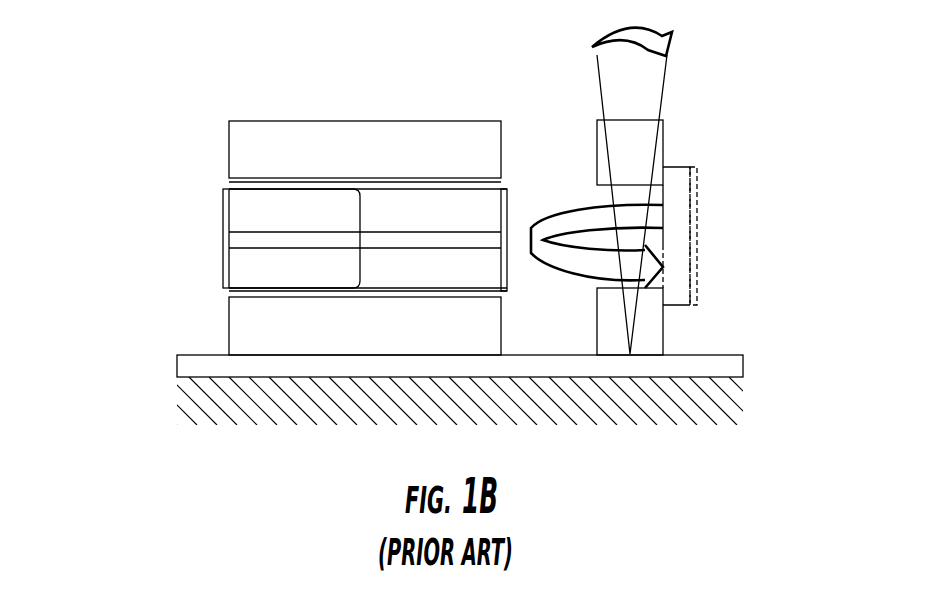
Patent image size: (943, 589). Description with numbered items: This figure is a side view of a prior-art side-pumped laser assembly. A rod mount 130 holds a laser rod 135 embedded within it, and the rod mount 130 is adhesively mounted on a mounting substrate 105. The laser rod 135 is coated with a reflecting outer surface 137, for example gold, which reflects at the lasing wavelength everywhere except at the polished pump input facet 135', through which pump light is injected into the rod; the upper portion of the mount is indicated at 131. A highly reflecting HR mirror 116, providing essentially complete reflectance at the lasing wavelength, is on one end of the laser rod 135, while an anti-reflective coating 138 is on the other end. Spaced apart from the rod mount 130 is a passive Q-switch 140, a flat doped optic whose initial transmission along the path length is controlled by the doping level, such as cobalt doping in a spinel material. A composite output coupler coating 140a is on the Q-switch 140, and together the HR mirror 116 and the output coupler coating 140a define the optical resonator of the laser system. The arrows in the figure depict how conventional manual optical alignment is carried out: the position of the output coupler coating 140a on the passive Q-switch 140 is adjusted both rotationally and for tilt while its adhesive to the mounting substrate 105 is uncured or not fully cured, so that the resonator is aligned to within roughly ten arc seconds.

The mounting substrate 105 is at (187, 367).
The rod mount 130 is at (237, 148).
The rod mount upper section 131 is at (382, 180).
The reflecting outer surface 137 is at (230, 187).
The HR mirror 116 is at (223, 218).
The laser rod 135 is at (288, 351).
The polished pump input facet 135' is at (317, 258).
The anti-reflective coating 138 is at (505, 210).
The passive Q-switch 140 is at (665, 268).
The output coupler coating 140a is at (692, 168).